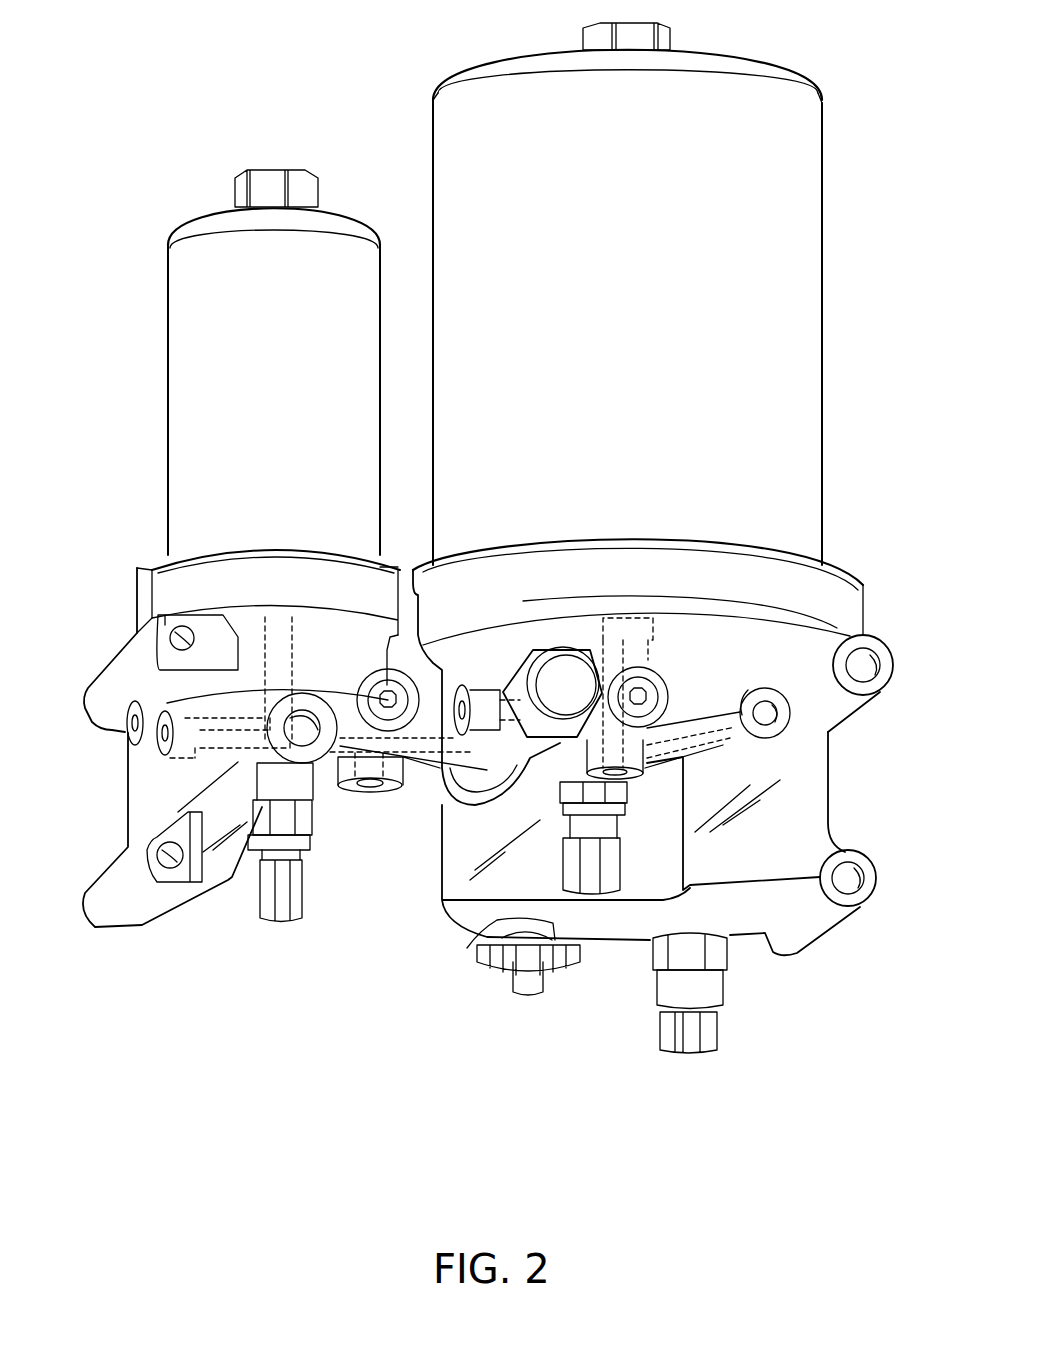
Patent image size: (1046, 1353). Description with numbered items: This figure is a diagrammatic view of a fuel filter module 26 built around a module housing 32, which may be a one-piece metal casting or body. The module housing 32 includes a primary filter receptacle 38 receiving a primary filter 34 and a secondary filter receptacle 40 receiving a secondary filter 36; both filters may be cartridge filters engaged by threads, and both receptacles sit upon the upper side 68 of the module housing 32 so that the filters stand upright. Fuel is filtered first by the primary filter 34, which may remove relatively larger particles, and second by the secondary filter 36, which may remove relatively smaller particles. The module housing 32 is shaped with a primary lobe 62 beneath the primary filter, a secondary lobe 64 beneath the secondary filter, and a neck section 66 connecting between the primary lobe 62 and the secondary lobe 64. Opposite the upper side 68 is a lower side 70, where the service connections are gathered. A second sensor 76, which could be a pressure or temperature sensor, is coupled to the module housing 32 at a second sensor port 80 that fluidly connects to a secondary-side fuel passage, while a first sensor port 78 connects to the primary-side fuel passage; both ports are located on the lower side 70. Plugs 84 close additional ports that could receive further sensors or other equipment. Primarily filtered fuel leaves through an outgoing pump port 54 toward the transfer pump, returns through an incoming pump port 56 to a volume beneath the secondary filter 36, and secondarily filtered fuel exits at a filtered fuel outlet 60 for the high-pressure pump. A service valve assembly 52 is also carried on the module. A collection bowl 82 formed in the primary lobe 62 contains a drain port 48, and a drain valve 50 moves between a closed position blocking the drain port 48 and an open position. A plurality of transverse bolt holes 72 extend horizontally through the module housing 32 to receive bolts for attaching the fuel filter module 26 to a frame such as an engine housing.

The fuel filter module 26 is at (885, 360).
The module housing 32 is at (826, 768).
The primary filter 34 is at (810, 82).
The secondary filter 36 is at (180, 215).
The primary filter receptacle 38 is at (843, 573).
The secondary filter receptacle 40 is at (138, 570).
The drain port 48 is at (472, 932).
The drain valve 50 is at (548, 978).
The service valve assembly 52 is at (587, 652).
The outgoing pump port 54 is at (620, 800).
The incoming pump port 56 is at (375, 795).
The filtered fuel outlet 60 is at (305, 748).
The primary lobe 62 is at (708, 575).
The secondary lobe 64 is at (272, 575).
The neck section 66 is at (410, 565).
The upper side 68 is at (862, 582).
The lower side 70 is at (745, 942).
The transverse bolt holes 72 is at (185, 652).
The second sensor 76 is at (302, 887).
The first sensor port 78 is at (530, 800).
The second sensor port 80 is at (315, 815).
The collection bowl 82 is at (795, 798).
The plugs 84 is at (652, 690).